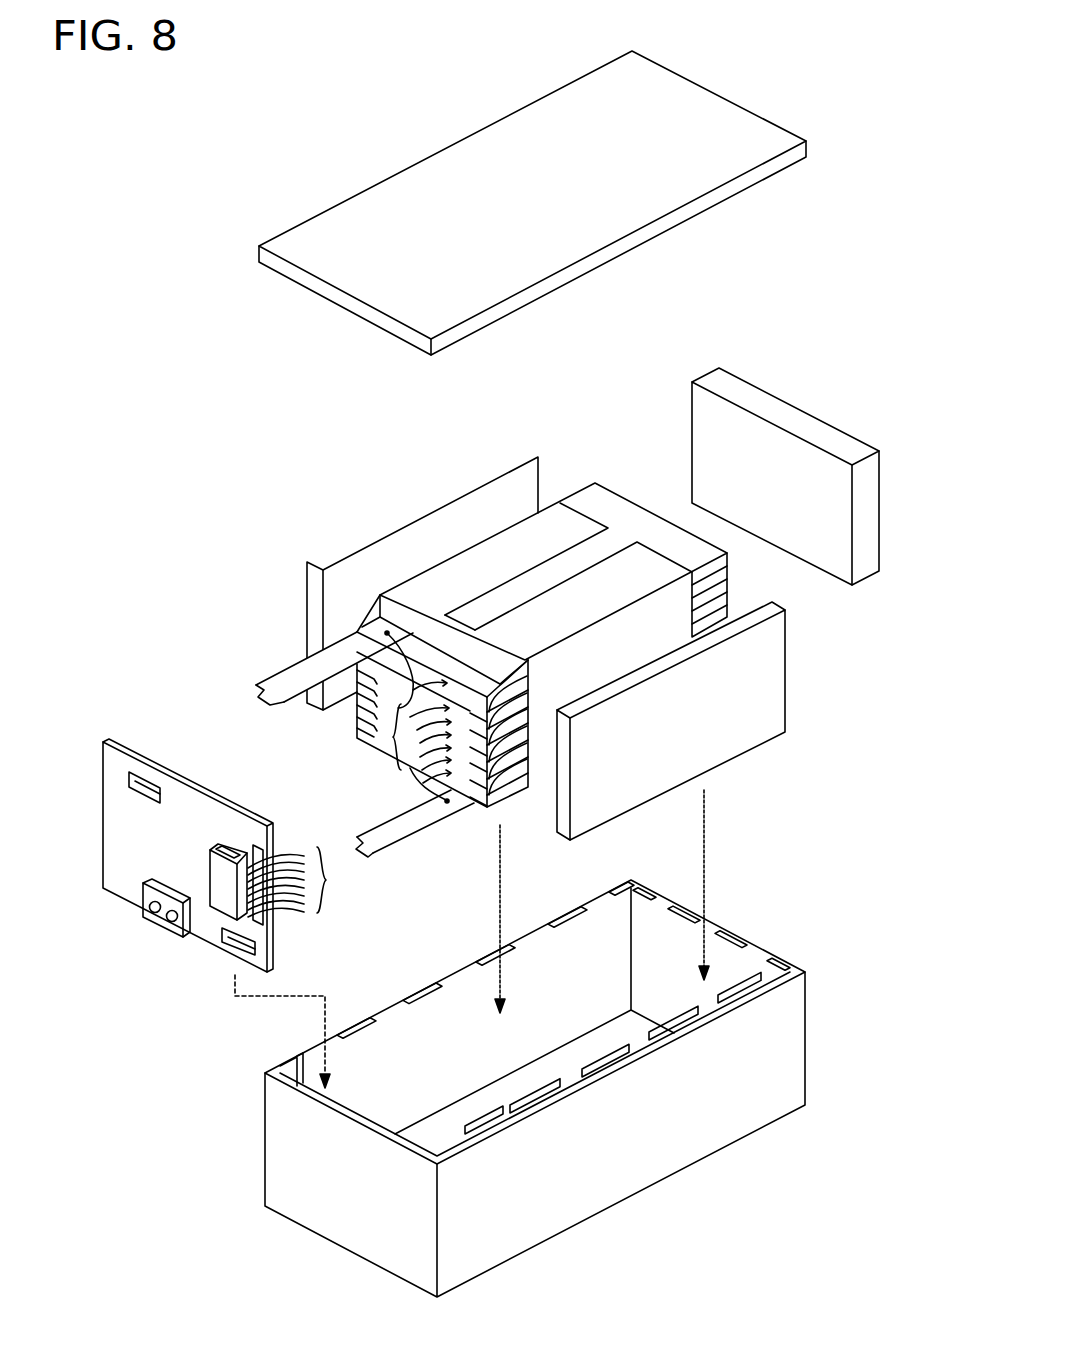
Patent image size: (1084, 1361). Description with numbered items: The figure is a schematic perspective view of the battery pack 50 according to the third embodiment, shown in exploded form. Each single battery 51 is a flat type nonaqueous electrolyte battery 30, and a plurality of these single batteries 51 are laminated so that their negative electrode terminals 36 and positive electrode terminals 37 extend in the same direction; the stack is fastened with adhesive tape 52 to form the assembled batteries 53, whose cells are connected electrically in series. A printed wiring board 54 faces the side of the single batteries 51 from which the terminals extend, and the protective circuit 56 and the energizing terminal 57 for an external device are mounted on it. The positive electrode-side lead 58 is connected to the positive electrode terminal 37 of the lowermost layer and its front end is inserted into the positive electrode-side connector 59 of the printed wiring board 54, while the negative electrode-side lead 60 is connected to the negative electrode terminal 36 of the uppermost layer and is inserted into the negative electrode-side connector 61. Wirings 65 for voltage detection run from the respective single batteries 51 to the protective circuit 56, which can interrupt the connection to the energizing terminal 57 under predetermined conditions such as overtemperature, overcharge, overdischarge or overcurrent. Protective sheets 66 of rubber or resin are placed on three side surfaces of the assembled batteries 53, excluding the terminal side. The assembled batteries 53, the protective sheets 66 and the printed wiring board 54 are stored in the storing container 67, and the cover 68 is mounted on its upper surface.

The battery pack 50 is at (185, 372).
The cover 68 is at (733, 130).
The protective sheet 66 is at (388, 520).
The assembled batteries 53 is at (487, 556).
The adhesive tape 52 is at (636, 620).
The single battery 51 is at (803, 595).
The flat type nonaqueous electrolyte battery 30 is at (728, 567).
The positive electrode terminal 37 is at (453, 690).
The negative electrode terminal 36 is at (366, 632).
The negative electrode-side lead 60 is at (283, 670).
The positive electrode-side lead 58 is at (407, 838).
The wirings for voltage detection 65 is at (393, 737).
The printed wiring board 54 is at (149, 751).
The negative electrode-side connector 61 is at (152, 792).
The protective circuit 56 is at (228, 846).
The energizing terminal 57 is at (163, 922).
The positive electrode-side connector 59 is at (258, 944).
The storing container 67 is at (797, 1050).